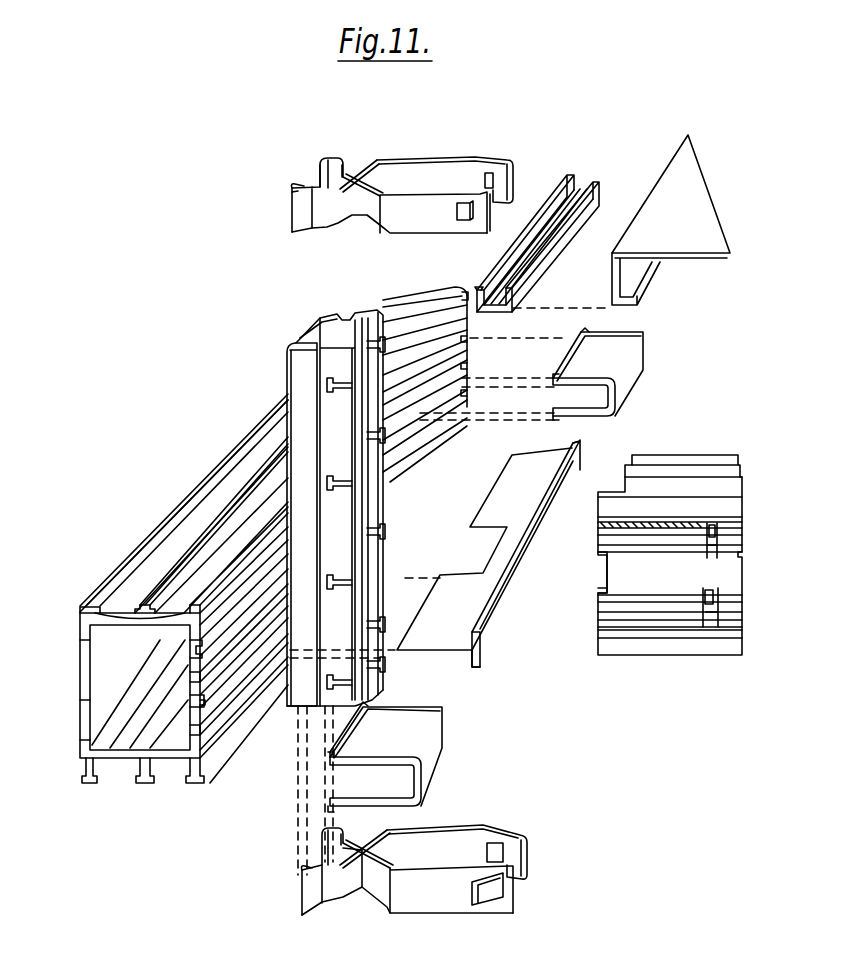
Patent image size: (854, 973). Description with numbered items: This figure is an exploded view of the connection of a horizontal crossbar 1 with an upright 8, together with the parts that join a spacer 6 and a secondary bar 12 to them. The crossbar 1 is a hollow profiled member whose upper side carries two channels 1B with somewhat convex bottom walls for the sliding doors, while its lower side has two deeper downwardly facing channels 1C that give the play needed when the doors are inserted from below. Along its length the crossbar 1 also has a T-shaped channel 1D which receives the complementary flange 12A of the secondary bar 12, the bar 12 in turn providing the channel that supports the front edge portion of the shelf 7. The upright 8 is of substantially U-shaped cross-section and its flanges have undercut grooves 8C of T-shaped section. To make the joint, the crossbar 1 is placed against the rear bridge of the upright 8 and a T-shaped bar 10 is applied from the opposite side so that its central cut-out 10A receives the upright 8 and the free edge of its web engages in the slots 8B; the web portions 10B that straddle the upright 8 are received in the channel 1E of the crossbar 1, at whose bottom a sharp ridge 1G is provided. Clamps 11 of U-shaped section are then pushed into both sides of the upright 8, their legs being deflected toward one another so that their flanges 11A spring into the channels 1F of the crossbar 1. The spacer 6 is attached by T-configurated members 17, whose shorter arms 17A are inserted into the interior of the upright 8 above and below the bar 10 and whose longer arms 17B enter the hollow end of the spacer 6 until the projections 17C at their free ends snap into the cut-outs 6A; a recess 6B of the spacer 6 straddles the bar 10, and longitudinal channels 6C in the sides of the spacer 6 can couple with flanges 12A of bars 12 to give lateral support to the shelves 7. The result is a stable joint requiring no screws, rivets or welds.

The crossbar 1 is at (105, 652).
The upper channels 1B is at (240, 525).
The lower channels 1C is at (177, 783).
The T-shaped channel 1D is at (187, 640).
The channel 1E is at (197, 704).
The channels 1F is at (188, 684).
The sharp ridge 1G is at (190, 702).
The spacer 6 is at (688, 485).
The cut-outs 6A is at (707, 600).
The recess 6B is at (603, 572).
The longitudinal channels 6C is at (602, 527).
The shelf 7 is at (658, 185).
The upright 8 is at (290, 365).
The slots 8B is at (343, 481).
The undercut grooves 8C is at (317, 333).
The T-shaped bar 10 is at (518, 580).
The central cut-out 10A is at (490, 550).
The web portions 10B is at (542, 456).
The clamps 11 is at (630, 363).
The flanges 11A is at (576, 342).
The secondary bar 12 is at (588, 187).
The flange 12A is at (556, 180).
The T-configurated members 17 is at (358, 170).
The shorter arms 17A is at (288, 194).
The longer arms 17B is at (448, 160).
The projections 17C is at (463, 222).